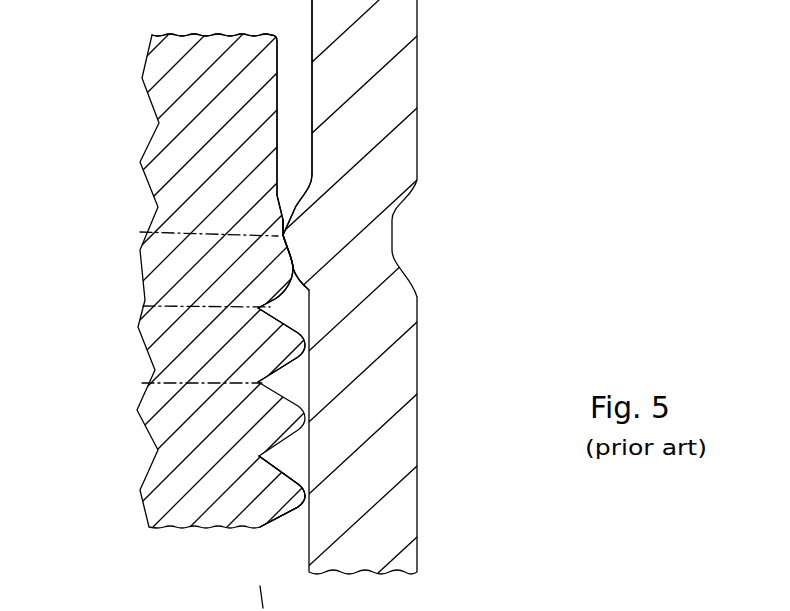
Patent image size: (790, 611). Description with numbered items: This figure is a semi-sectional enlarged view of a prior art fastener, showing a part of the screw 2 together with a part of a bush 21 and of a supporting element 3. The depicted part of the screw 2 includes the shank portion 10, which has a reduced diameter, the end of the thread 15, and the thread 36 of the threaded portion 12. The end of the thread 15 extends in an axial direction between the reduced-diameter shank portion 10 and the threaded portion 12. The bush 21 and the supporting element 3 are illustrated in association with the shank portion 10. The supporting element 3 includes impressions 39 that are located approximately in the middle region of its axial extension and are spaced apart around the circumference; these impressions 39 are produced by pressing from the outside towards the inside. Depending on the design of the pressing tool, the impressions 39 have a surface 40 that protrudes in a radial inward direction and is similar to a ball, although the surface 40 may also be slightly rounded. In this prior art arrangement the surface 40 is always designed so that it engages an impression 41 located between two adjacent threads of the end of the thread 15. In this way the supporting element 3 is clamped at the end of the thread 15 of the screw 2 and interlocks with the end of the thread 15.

The screw 2 is at (198, 165).
The shank portion 10 is at (190, 108).
The impression 41 is at (268, 306).
The end of the thread 15 is at (247, 344).
The threaded portion 12 is at (256, 489).
The thread 36 is at (282, 491).
The supporting element 3 is at (420, 116).
The bush 21 is at (357, 148).
The impressions 39 is at (340, 224).
The surface 40 is at (283, 238).